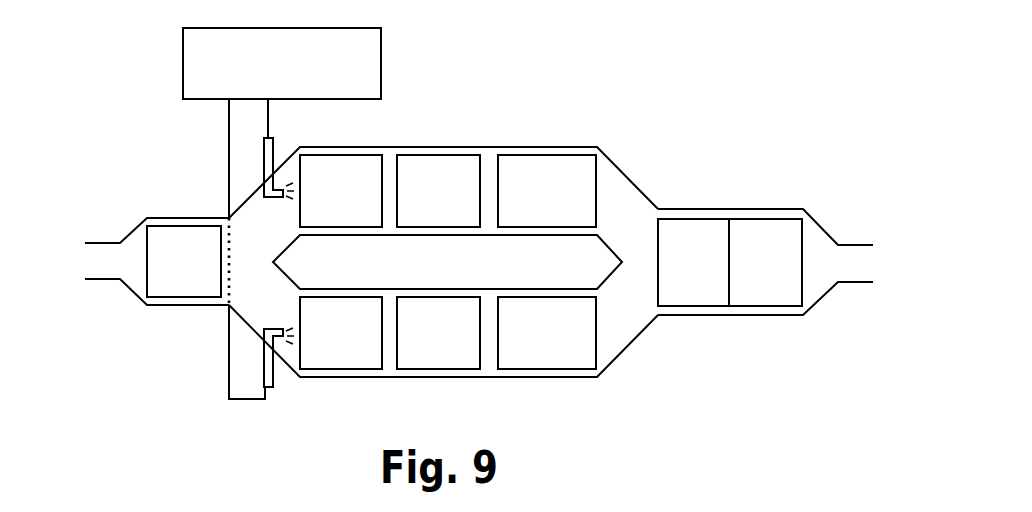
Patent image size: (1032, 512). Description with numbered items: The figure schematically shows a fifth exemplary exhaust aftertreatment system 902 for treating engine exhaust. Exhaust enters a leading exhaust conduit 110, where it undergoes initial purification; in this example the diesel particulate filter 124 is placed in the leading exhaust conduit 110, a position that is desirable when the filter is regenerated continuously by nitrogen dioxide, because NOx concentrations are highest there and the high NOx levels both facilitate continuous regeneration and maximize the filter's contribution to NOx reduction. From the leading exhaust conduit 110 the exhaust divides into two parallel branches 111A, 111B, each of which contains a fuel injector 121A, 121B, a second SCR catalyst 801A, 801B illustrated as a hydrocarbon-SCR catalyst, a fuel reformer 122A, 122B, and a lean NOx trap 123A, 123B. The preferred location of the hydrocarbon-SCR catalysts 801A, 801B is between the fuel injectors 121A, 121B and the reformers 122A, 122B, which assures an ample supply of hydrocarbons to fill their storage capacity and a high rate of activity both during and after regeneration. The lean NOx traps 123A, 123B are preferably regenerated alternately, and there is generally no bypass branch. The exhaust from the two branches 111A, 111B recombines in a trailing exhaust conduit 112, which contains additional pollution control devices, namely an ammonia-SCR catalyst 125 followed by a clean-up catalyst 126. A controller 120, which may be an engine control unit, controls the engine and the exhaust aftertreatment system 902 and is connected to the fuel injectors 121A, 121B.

The exhaust aftertreatment system 902 is at (662, 66).
The leading exhaust conduit 110 is at (135, 262).
The diesel particulate filter 124 is at (158, 242).
The controller 120 is at (373, 47).
The first branch 111A is at (262, 204).
The second branch 111B is at (253, 327).
The fuel injector 121A is at (277, 140).
The fuel injector 121B is at (268, 362).
The second SCR catalyst 801A is at (358, 162).
The second SCR catalyst 801B is at (353, 360).
The fuel reformer 122A is at (452, 163).
The fuel reformer 122B is at (448, 361).
The lean NOx trap 123A is at (552, 165).
The lean NOx trap 123B is at (548, 358).
The ammonia-SCR catalyst 125 is at (707, 228).
The clean-up catalyst 126 is at (772, 228).
The trailing exhaust conduit 112 is at (770, 312).